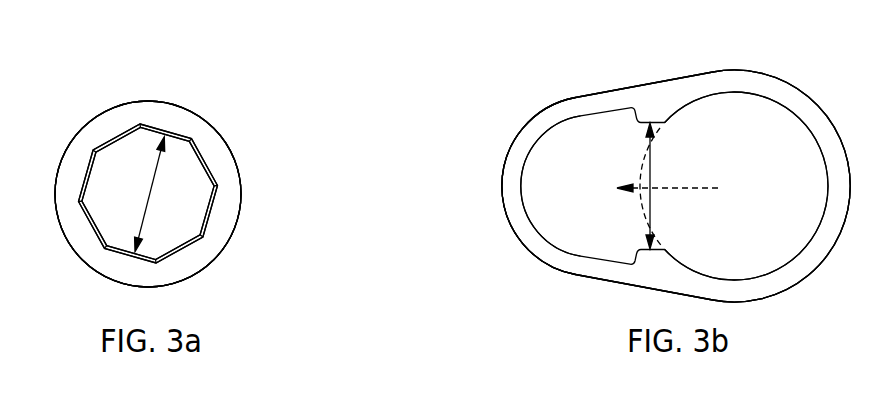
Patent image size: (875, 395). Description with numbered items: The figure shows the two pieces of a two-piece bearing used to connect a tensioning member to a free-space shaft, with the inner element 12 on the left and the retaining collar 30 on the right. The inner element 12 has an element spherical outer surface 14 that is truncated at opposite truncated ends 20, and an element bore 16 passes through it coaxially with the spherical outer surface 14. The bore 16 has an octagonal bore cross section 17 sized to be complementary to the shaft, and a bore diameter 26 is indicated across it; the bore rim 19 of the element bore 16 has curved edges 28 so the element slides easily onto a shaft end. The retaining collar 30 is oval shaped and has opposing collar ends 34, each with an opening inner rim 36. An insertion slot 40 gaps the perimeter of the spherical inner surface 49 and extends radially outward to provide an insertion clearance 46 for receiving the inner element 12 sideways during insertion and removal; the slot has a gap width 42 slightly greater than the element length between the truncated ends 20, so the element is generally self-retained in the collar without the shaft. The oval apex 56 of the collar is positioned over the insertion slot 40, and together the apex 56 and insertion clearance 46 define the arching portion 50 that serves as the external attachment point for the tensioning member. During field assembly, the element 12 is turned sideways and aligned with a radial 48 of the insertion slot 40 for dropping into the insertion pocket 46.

In FIG. 3A, the inner element 12 is at (197, 257).
In FIG. 3A, the element spherical outer surface 14 is at (235, 232).
In FIG. 3A, the element bore 16 is at (103, 187).
In FIG. 3A, the bore cross section 17 is at (200, 152).
In FIG. 3A, the bore rim 19 is at (217, 213).
In FIG. 3A, the truncated ends 20 is at (78, 220).
In FIG. 3A, the bore diameter 26 is at (150, 170).
In FIG. 3A, the curved edges 28 is at (220, 195).
In FIG. 3B, the retaining collar 30 is at (715, 70).
In FIG. 3B, the collar ends 34 is at (730, 80).
In FIG. 3B, the opening inner rim 36 is at (775, 102).
In FIG. 3B, the insertion slot 40 is at (556, 216).
In FIG. 3B, the gap width 42 is at (650, 167).
In FIG. 3B, the insertion clearance 46 is at (575, 133).
In FIG. 3B, the radial 48 is at (682, 185).
In FIG. 3B, the perimeter of the spherical inner surface 49 is at (660, 237).
In FIG. 3B, the arching portion 50 is at (518, 152).
In FIG. 3B, the oval apex 56 is at (502, 185).